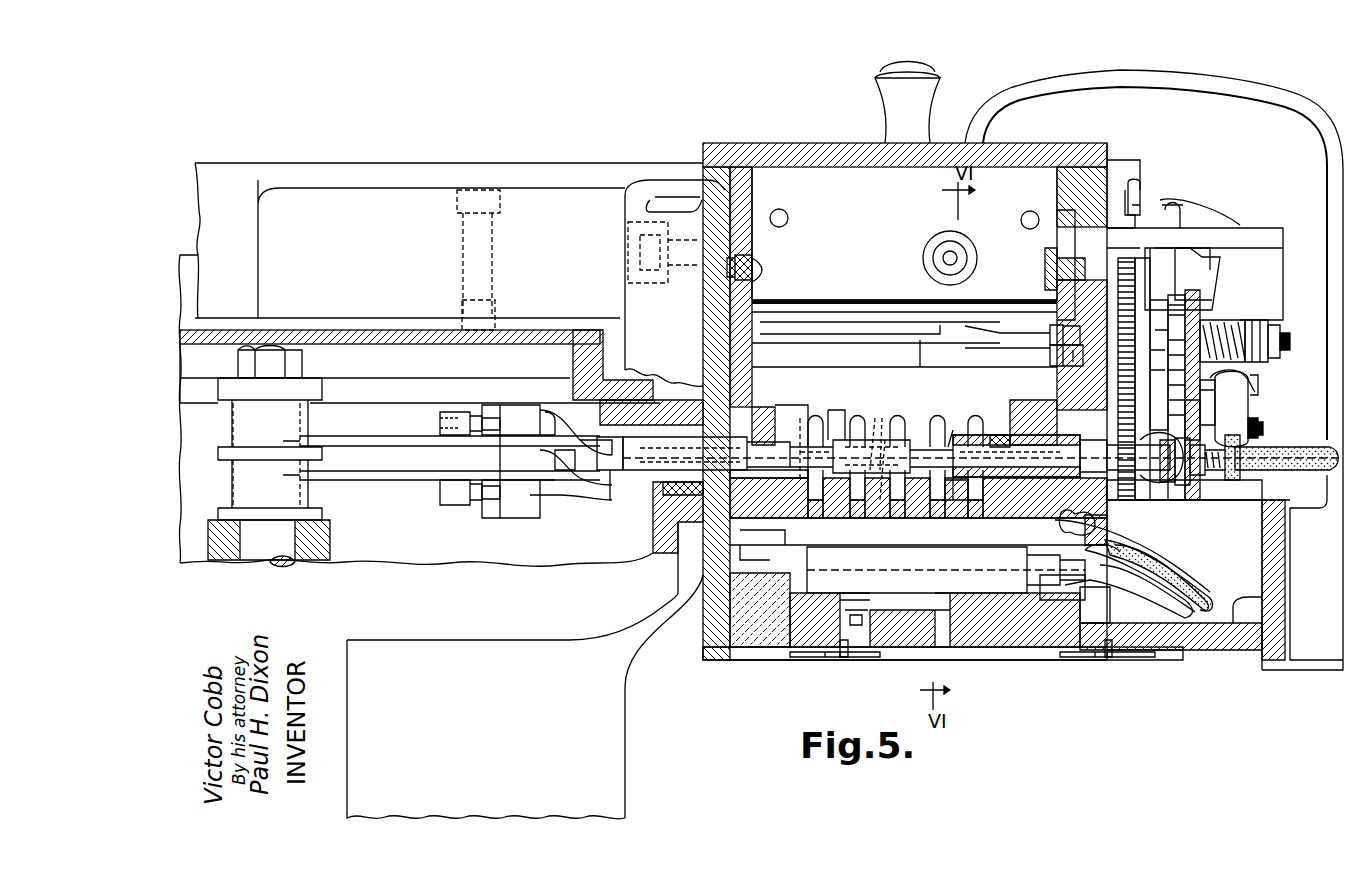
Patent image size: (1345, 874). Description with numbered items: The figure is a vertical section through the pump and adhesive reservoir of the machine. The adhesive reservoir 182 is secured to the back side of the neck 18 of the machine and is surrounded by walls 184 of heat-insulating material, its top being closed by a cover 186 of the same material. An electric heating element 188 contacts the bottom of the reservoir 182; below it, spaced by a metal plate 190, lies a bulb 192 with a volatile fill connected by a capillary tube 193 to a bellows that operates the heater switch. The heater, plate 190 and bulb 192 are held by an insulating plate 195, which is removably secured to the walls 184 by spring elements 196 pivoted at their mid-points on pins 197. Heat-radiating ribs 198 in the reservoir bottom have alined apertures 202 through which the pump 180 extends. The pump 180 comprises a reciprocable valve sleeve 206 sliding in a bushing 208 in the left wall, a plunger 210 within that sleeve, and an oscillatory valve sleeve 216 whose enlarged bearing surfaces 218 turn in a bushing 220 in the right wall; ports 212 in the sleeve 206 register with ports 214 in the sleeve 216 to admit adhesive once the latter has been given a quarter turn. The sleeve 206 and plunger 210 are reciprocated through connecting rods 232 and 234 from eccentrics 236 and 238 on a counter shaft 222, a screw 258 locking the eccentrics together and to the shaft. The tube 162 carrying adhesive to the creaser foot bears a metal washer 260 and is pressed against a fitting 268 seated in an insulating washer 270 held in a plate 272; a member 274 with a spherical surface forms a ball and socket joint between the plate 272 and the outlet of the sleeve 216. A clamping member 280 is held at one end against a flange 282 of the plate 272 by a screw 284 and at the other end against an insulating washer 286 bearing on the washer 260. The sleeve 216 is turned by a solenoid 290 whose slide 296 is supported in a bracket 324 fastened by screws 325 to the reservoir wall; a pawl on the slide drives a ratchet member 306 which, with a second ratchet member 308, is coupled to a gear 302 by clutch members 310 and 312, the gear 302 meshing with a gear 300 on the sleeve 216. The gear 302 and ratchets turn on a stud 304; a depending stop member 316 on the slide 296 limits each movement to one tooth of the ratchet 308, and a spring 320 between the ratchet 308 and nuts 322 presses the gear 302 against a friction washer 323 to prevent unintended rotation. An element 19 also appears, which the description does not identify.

The neck 18 is at (495, 701).
The casing cover 19 is at (1296, 98).
The tube 162 is at (1305, 472).
The pump 180 is at (836, 426).
The adhesive reservoir 182 is at (822, 185).
The walls 184 is at (1112, 172).
The cover 186 is at (876, 143).
The electric heating element 188 is at (788, 535).
The metal plate 190 is at (735, 556).
The bulb 192 is at (948, 595).
The capillary tube 193 is at (1132, 580).
The plate 195 is at (1000, 660).
The spring elements 196 is at (1083, 660).
The pins 197 is at (1112, 660).
The ribs 198 is at (918, 447).
The alined apertures 202 is at (865, 430).
The reciprocable valve sleeve 206 is at (792, 445).
The bushing 208 is at (645, 486).
The plunger 210 is at (800, 418).
The ports 212 is at (883, 440).
The ports 214 is at (880, 420).
The oscillatory valve sleeve 216 is at (958, 440).
The enlarged bearing surfaces 218 is at (955, 480).
The bushing 220 is at (1003, 435).
The counter shaft 222 is at (240, 560).
The connecting rod 232 is at (362, 475).
The connecting rod 234 is at (362, 443).
The eccentric 236 is at (233, 482).
The eccentric 238 is at (233, 422).
The screw 258 is at (285, 563).
The metal washer 260 is at (1198, 495).
The fitting 268 is at (1175, 490).
The washer 270 is at (1190, 505).
The plate 272 is at (1182, 394).
The member 274 is at (1180, 405).
The clamping member 280 is at (1248, 386).
The flange 282 is at (1252, 374).
The screw 284 is at (1263, 430).
The washer 286 is at (1218, 500).
The solenoid 290 is at (1283, 236).
The slide 296 is at (1192, 258).
The gear 300 is at (1060, 510).
The gear 302 is at (1060, 303).
The stud 304 is at (1288, 349).
The ratchet member 306 is at (1192, 316).
The ratchet member 308 is at (1212, 330).
The clutch member 310 is at (1050, 350).
The clutch member 312 is at (1158, 325).
The stop member 316 is at (1198, 308).
The spring 320 is at (1268, 325).
The nuts 322 is at (1280, 336).
The washer 323 is at (1050, 334).
The bracket 324 is at (1193, 235).
The screws 325 is at (1142, 185).